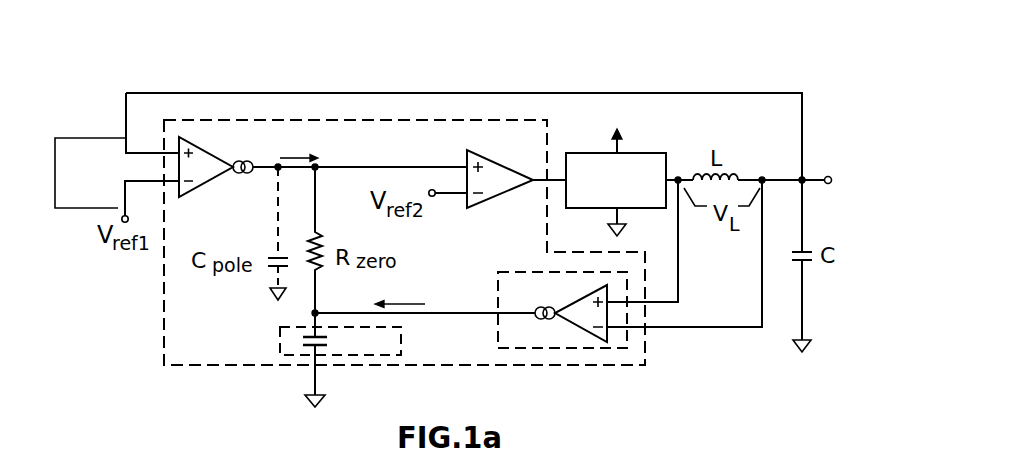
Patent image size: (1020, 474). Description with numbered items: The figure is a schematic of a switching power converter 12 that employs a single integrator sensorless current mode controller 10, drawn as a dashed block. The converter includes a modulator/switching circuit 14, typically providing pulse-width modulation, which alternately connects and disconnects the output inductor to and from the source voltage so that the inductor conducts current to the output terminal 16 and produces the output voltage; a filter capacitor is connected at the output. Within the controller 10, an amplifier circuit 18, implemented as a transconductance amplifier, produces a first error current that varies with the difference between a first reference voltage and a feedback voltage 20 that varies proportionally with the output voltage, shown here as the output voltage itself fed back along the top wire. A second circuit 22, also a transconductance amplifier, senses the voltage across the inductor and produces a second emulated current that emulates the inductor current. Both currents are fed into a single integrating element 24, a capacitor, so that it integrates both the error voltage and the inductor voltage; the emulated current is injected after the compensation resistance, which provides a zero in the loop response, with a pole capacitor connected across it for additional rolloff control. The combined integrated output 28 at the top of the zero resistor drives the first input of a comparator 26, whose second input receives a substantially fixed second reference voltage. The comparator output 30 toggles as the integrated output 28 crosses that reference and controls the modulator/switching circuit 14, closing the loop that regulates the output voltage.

The single integrator SCM controller 10 is at (323, 120).
The switching power converter 12 is at (479, 80).
The modulator/switching circuit 14 is at (648, 153).
The output terminal 16 is at (824, 188).
The amplifier circuit 18 is at (212, 182).
The voltage 20 is at (126, 116).
The circuit 22 is at (514, 272).
The single integrating element 24 is at (280, 349).
The comparator 26 is at (500, 194).
The integrated output 28 is at (355, 167).
The comparator output 30 is at (554, 177).